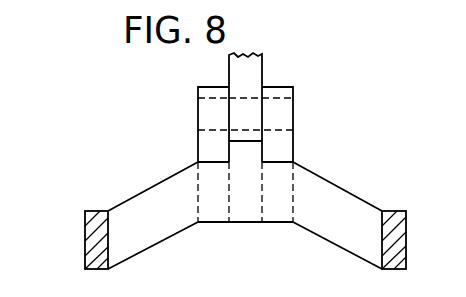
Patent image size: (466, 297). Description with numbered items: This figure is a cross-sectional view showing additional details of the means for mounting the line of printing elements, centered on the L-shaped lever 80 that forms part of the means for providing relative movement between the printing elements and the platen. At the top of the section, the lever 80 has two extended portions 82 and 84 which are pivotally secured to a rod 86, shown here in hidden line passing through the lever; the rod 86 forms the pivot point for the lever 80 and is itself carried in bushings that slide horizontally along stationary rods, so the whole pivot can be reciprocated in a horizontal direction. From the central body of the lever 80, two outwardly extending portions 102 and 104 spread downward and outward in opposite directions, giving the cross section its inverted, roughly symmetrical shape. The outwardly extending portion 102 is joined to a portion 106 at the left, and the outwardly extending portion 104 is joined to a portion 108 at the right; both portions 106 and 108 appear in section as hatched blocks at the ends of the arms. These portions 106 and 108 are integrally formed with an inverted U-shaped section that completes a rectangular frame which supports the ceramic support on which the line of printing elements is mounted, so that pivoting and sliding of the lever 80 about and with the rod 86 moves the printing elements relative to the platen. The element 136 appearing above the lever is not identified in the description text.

The L-shaped lever 80 is at (237, 227).
The extended portion 82 is at (200, 90).
The extended portion 84 is at (283, 90).
The rod 86 is at (282, 130).
The outwardly extending portion 102 is at (148, 200).
The outwardly extending portion 104 is at (342, 210).
The portion 106 is at (97, 247).
The portion 108 is at (395, 250).
The post 136 is at (255, 65).